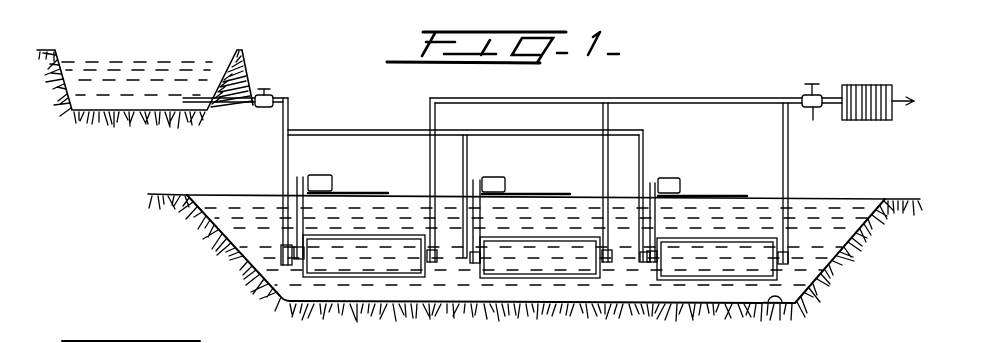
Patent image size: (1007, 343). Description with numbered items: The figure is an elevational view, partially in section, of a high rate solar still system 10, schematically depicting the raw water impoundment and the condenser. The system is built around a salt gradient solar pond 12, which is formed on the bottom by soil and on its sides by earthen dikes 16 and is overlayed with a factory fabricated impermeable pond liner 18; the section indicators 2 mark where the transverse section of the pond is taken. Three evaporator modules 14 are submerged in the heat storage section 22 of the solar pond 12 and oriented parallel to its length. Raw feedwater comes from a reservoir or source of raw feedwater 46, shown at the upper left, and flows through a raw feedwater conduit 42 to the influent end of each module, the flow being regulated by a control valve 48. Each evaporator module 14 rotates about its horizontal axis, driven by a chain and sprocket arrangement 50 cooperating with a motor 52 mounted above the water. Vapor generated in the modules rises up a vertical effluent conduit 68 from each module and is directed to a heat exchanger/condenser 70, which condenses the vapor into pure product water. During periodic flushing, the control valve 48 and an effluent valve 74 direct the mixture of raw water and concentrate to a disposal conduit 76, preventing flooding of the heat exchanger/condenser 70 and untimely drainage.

The section line 2- 2 is at (177, 228).
The high rate solar still system 10 is at (805, 199).
The salt gradient solar pond 12 is at (823, 247).
The evaporator module 14 is at (395, 265).
The earthen dikes 16 is at (827, 275).
The impermeable pond liner 18 is at (781, 318).
The heat storage section 22 is at (643, 300).
The raw feedwater conduit 42 is at (281, 167).
The reservoir or source of raw feedwater 46 is at (240, 53).
The control valve 48 is at (267, 97).
The chain and sprocket arrangement 50 is at (300, 212).
The motor 52 is at (318, 185).
The vertical effluent conduit 68 is at (433, 174).
The heat exchanger/condenser 70 is at (858, 98).
The effluent valve 74 is at (815, 96).
The disposal conduit 76 is at (813, 120).